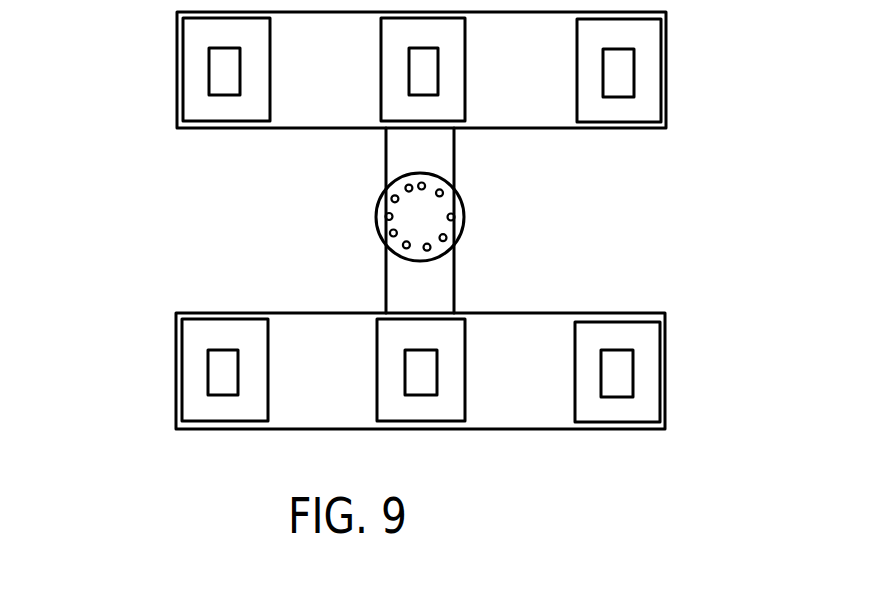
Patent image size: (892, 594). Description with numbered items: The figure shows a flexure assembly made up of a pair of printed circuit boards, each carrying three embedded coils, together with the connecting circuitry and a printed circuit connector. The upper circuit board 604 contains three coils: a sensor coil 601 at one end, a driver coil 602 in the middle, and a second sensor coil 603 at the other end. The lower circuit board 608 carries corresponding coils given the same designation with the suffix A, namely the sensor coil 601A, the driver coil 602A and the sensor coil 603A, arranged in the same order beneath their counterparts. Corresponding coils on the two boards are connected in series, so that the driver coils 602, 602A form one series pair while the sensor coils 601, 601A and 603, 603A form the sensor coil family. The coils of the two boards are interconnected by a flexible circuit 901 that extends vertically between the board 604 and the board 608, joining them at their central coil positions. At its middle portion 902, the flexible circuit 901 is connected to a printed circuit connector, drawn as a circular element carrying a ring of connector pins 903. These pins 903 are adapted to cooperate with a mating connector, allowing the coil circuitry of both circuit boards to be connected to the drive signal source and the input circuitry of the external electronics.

The sensor coil 601 is at (200, 50).
The driver coil 602 is at (397, 53).
The sensor coil 603 is at (648, 45).
The circuit board 604 is at (531, 107).
The circuit board 608 is at (456, 430).
The flexible circuit 901 is at (395, 157).
The middle portion 902 is at (376, 220).
The connector pins 903 is at (464, 217).
The sensor coil 601A is at (197, 375).
The driver coil 602A is at (390, 377).
The sensor coil 603A is at (593, 370).